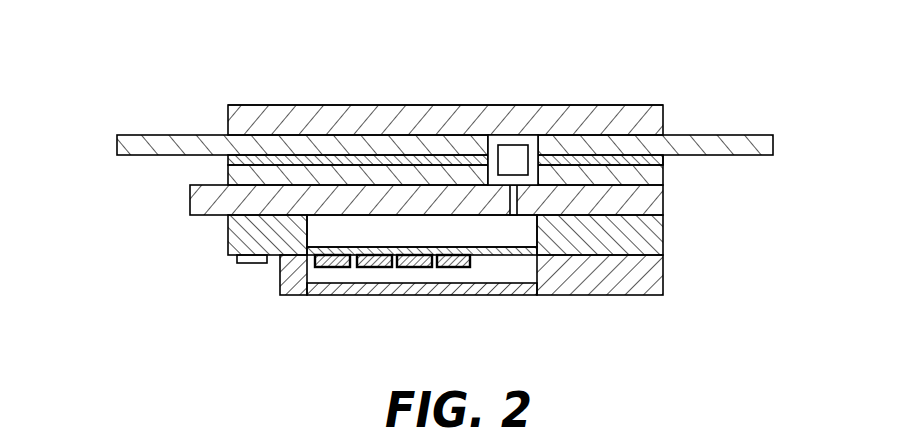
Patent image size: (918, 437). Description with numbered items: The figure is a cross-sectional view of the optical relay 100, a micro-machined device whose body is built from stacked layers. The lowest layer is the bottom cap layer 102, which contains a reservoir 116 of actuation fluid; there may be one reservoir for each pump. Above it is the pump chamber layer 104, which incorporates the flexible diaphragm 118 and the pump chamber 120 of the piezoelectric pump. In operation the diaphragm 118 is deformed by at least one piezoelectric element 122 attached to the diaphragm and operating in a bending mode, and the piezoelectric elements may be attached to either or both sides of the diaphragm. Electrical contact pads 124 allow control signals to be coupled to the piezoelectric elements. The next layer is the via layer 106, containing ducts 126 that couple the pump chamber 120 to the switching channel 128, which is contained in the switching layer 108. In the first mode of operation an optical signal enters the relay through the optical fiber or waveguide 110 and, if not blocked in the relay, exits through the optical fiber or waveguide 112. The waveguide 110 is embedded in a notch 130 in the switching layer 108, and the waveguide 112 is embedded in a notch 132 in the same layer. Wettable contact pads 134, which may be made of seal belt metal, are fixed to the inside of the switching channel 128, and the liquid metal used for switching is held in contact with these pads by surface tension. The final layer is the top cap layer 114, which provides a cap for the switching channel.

The optical relay 100 is at (190, 38).
The bottom cap layer 102 is at (645, 295).
The pump chamber layer 104 is at (663, 237).
The via layer 106 is at (188, 200).
The switching layer 108 is at (665, 170).
The optical fiber or waveguide 110 is at (145, 135).
The optical fiber or waveguide 112 is at (737, 135).
The top cap layer 114 is at (295, 105).
The reservoir 116 is at (483, 268).
The flexible diaphragm 118 is at (517, 255).
The pump chamber 120 is at (258, 233).
The piezoelectric element 122 is at (447, 267).
The electrical contact pads 124 is at (252, 265).
The ducts 126 is at (618, 162).
The switching channel 128 is at (512, 148).
The notch 130 is at (228, 162).
The notch 132 is at (665, 162).
The wettable contact pads 134 is at (495, 140).